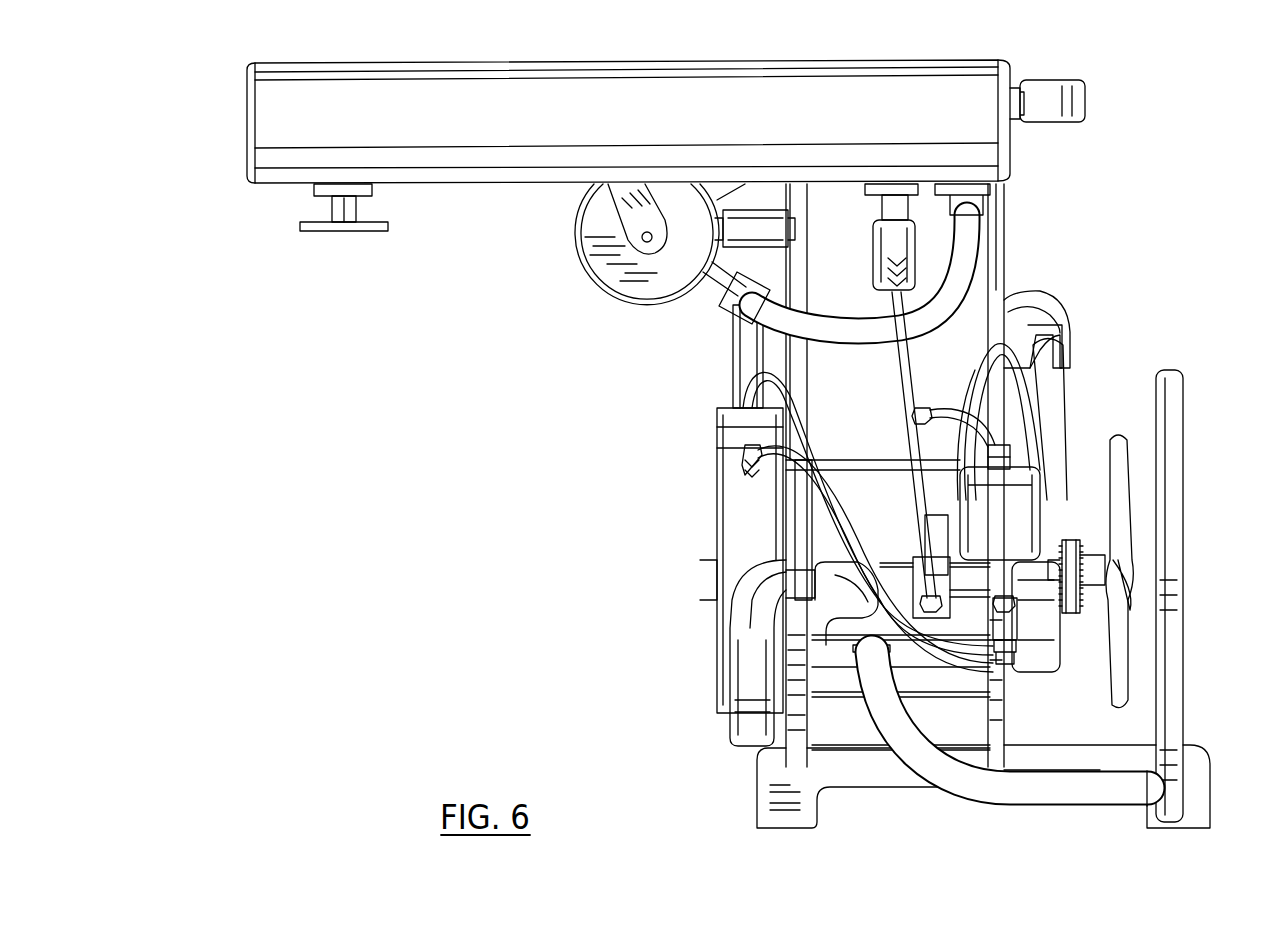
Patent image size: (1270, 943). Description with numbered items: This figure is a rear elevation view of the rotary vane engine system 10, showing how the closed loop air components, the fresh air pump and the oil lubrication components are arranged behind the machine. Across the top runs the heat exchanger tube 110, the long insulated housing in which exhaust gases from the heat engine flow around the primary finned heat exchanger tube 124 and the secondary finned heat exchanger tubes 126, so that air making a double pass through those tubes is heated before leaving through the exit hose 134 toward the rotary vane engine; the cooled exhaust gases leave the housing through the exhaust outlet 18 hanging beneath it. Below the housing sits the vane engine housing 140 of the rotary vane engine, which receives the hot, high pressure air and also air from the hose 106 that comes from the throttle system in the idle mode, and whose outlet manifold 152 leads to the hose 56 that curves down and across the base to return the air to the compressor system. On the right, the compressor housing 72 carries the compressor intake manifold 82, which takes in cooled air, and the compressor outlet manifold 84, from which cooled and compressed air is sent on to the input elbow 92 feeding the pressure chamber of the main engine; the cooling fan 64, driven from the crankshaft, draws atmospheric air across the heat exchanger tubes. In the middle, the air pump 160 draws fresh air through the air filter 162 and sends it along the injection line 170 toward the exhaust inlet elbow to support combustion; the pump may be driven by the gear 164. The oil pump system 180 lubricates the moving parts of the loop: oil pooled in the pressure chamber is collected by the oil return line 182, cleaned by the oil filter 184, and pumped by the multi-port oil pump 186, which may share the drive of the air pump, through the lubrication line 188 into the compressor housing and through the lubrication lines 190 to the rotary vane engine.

The rotary vane engine system 10 is at (418, 530).
The exhaust outlet 18 is at (360, 228).
The hose 56 is at (1012, 797).
The cooling fan 64 is at (1118, 440).
The compressor housing 72 is at (1055, 462).
The compressor intake manifold 82 is at (1053, 398).
The compressor outlet manifold 84 is at (1047, 537).
The input elbow 92 is at (1043, 303).
The hose 106 is at (748, 357).
The heat exchanger tube 110 is at (513, 98).
The primary finned heat exchanger tube 124 is at (888, 246).
The secondary finned heat exchanger tubes 126 is at (880, 205).
The exit hose 134 is at (965, 234).
The vane engine housing 140 is at (740, 510).
The outlet manifold 152 is at (742, 693).
The air pump 160 is at (918, 593).
The air filter 162 is at (938, 532).
The gear 164 is at (1062, 618).
The injection line 170 is at (897, 394).
The oil pump system 180 is at (1000, 515).
The oil return line 182 is at (952, 378).
The oil filter 184 is at (966, 462).
The multi-port oil pump 186 is at (1010, 628).
The lubrication line 188 is at (1017, 367).
The lubrication lines 190 is at (820, 490).